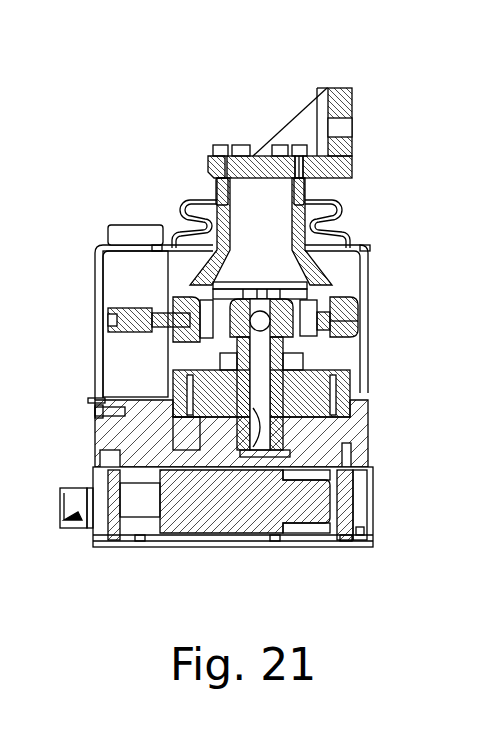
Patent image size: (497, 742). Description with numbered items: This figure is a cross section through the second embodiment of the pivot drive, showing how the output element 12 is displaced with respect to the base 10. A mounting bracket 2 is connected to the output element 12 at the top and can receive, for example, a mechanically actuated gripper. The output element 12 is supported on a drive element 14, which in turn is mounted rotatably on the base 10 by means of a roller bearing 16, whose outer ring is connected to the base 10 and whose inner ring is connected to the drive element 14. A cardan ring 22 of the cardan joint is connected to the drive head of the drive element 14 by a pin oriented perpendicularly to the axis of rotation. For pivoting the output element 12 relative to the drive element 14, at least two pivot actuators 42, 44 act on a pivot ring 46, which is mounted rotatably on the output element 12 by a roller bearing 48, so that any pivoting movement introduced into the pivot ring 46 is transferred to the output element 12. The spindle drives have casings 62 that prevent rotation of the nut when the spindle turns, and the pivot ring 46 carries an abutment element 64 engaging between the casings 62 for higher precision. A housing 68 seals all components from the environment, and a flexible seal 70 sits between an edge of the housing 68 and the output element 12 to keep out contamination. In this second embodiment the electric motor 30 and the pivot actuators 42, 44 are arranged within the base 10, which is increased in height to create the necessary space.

The mounting bracket 2 is at (352, 105).
The base 10 is at (366, 447).
The output element 12 is at (332, 207).
The drive element 14 is at (250, 418).
The roller bearing 16 is at (368, 410).
The cardan ring 22 is at (313, 382).
The electric motor 30 is at (275, 513).
The pivot actuator 42 is at (319, 549).
The pivot actuator 44 is at (338, 576).
The pivot ring 46 is at (352, 318).
The roller bearing 48 is at (352, 327).
The casing 62 is at (147, 263).
The abutment element 64 is at (140, 318).
The housing 68 is at (370, 283).
The flexible seal 70 is at (340, 223).